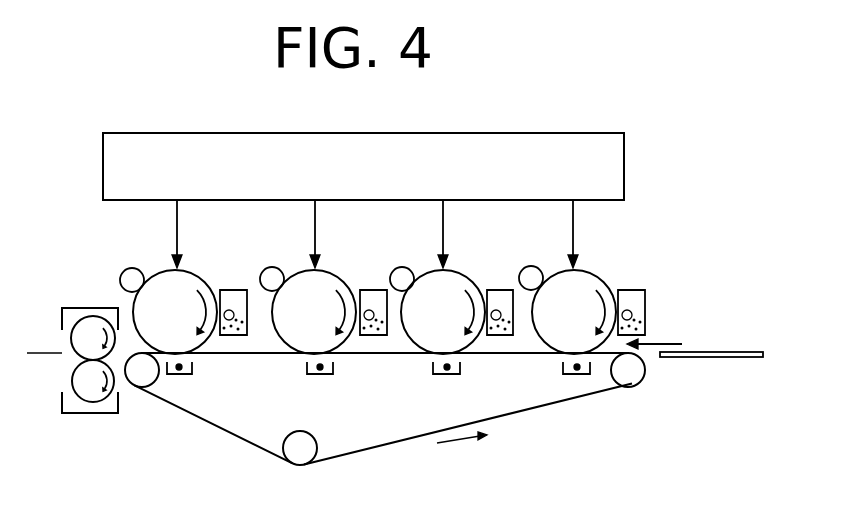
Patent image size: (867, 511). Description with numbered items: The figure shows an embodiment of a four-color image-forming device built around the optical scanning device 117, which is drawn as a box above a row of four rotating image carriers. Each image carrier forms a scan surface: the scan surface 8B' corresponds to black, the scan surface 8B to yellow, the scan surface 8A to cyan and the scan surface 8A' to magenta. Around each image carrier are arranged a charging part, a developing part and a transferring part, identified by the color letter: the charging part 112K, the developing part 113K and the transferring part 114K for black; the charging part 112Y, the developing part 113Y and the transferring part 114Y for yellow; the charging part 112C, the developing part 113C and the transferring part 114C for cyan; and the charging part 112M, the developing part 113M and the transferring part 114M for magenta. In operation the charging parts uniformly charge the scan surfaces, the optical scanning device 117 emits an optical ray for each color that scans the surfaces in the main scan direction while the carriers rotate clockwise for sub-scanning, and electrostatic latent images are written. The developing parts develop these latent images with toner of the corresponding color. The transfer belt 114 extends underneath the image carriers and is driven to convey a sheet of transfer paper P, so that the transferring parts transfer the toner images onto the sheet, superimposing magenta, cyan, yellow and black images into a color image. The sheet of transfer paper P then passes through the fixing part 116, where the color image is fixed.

The optical scanning device 117 is at (624, 178).
The charging part 112K is at (126, 270).
The charging part 112Y is at (266, 268).
The charging part 112C is at (395, 268).
The charging part 112M is at (525, 267).
The scan surface 8B' is at (175, 283).
The scan surface 8B is at (315, 283).
The scan surface 8A is at (445, 283).
The scan surface 8A' is at (582, 283).
The developing part 113K is at (231, 290).
The developing part 113Y is at (367, 290).
The developing part 113C is at (491, 290).
The developing part 113M is at (623, 290).
The transfer belt 114 is at (363, 452).
The transferring part 114K is at (185, 376).
The transferring part 114Y is at (320, 376).
The transferring part 114C is at (440, 376).
The transferring part 114M is at (562, 376).
The fixing part 116 is at (100, 413).
The sheet of transfer paper P is at (708, 358).